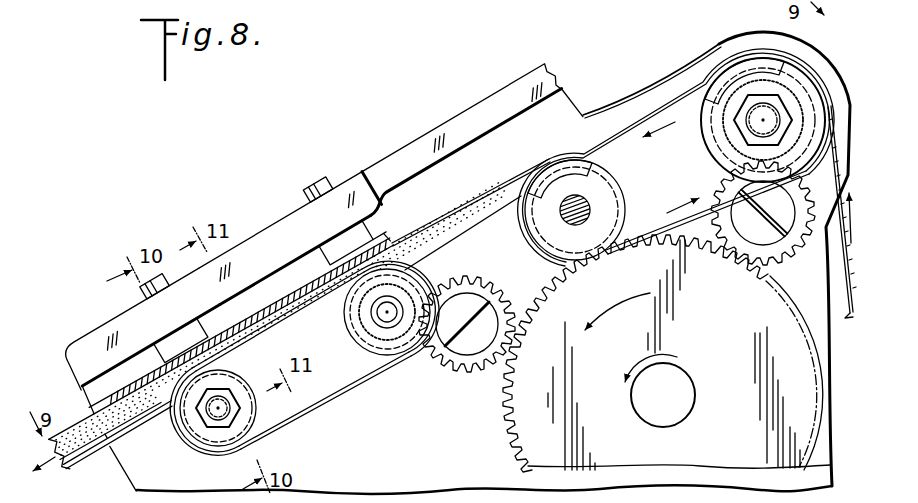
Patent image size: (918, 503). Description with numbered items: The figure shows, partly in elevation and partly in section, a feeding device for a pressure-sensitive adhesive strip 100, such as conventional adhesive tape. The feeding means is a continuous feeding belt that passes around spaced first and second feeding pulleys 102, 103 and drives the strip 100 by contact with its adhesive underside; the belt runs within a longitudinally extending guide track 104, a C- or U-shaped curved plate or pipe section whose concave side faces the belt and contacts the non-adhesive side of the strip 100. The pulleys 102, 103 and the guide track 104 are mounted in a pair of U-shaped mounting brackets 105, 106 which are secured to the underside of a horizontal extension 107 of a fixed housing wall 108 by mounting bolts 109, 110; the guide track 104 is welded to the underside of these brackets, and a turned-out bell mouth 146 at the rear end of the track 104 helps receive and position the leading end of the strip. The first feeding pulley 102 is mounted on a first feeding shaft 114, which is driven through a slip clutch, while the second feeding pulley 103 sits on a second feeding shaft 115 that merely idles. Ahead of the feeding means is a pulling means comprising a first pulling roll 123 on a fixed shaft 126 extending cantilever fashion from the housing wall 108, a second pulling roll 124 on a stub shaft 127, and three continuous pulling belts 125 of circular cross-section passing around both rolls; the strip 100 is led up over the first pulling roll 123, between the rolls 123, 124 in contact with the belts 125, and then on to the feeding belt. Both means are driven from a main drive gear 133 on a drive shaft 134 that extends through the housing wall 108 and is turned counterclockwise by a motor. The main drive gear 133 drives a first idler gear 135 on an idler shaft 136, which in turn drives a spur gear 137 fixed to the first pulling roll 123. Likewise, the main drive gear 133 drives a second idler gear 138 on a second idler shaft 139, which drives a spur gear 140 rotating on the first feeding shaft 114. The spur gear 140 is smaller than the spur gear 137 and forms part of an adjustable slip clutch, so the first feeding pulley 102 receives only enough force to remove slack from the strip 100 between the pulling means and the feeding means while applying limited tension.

The pressure-sensitive adhesive strip 100 is at (493, 190).
The first feeding pulley 102 is at (350, 340).
The second feeding pulley 103 is at (181, 447).
The guide track 104 is at (318, 247).
The U-shaped mounting bracket 105 is at (386, 206).
The U-shaped mounting bracket 106 is at (184, 323).
The horizontal extension 107 is at (96, 337).
The fixed housing wall 108 is at (597, 112).
The mounting bolt 109 is at (316, 180).
The mounting bolt 110 is at (153, 291).
The first feeding shaft 114 is at (389, 320).
The second feeding shaft 115 is at (206, 422).
The first pulling roll 123 is at (710, 131).
The second pulling roll 124 is at (541, 243).
The pulling belts 125 is at (634, 142).
The fixed shaft 126 is at (762, 100).
The stub shaft 127 is at (586, 225).
The main drive gear 133 is at (729, 347).
The drive shaft 134 is at (679, 421).
The first idler gear 135 is at (797, 224).
The idler shaft 136 is at (746, 220).
The spur gear 137 is at (797, 93).
The second idler gear 138 is at (458, 377).
The second idler shaft 139 is at (474, 298).
The spur gear 140 is at (404, 284).
The bell mouth 146 is at (384, 231).